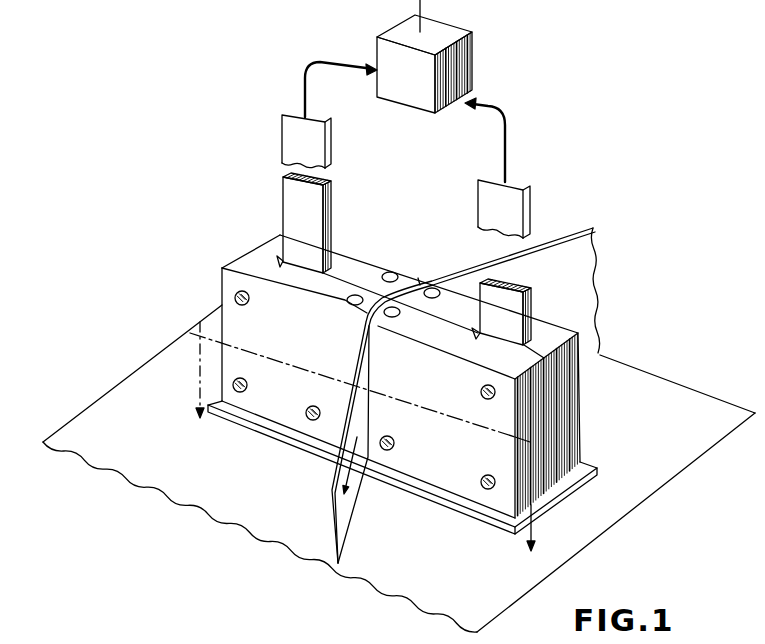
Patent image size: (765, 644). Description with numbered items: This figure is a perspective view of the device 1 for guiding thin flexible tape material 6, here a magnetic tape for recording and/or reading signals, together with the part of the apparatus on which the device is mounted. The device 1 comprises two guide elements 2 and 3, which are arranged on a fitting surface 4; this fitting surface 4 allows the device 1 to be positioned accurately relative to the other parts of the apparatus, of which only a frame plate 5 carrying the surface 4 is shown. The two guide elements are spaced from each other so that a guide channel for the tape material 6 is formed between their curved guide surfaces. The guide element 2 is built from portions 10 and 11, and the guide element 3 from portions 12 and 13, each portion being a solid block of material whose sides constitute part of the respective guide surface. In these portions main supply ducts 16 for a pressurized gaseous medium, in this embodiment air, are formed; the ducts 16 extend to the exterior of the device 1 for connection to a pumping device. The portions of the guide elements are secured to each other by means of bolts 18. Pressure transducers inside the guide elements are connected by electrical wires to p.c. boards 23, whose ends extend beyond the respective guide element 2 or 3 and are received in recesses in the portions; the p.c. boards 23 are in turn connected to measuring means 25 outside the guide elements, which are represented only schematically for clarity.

The device 1 is at (407, 460).
The guide element 2 is at (433, 499).
The guide element 3 is at (267, 432).
The fitting surface 4 is at (562, 488).
The frame plate 5 is at (618, 515).
The tape material 6 is at (582, 248).
The portion of guide element 10 is at (565, 405).
The portion of guide element 11 is at (530, 420).
The portion of guide element 12 is at (350, 260).
The portion of guide element 13 is at (232, 280).
The main supply duct 16 is at (432, 287).
The bolt 18 is at (481, 392).
The p.c. board 23 is at (295, 197).
The measuring means 25 is at (407, 97).